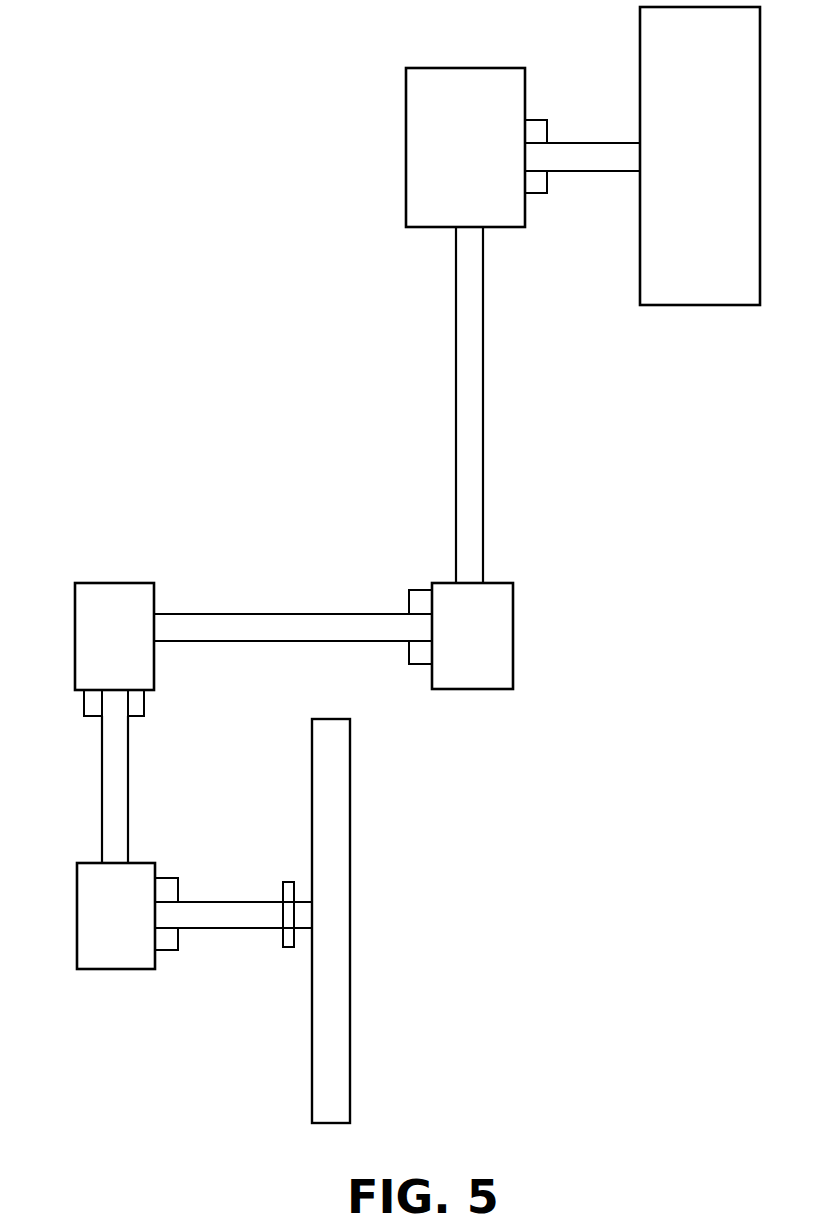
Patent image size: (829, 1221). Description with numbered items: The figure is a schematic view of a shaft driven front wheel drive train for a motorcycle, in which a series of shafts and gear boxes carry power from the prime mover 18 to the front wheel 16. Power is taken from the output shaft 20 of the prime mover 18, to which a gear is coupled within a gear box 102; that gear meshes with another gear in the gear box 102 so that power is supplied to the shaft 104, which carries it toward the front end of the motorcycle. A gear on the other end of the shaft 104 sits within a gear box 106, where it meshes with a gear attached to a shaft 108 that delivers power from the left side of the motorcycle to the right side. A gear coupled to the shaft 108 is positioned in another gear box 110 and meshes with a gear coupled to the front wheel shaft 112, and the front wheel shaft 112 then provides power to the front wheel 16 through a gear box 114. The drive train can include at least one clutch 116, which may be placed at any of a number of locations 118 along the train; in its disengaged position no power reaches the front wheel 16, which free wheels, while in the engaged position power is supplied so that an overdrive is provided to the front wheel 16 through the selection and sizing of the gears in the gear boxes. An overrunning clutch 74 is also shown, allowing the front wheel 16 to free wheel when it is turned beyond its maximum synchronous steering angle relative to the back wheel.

The front wheel 16 is at (343, 931).
The prime mover 18 is at (712, 173).
The output shaft 20 is at (578, 143).
The overrunning clutch 74 is at (290, 882).
The gear box 102 is at (406, 150).
The shaft 104 is at (456, 338).
The gear box 106 is at (488, 689).
The shaft 108 is at (323, 613).
The gear box 110 is at (104, 583).
The front wheel shaft 112 is at (102, 828).
The gear box 114 is at (107, 969).
The clutch 116 is at (536, 193).
The locations 118 is at (534, 120).